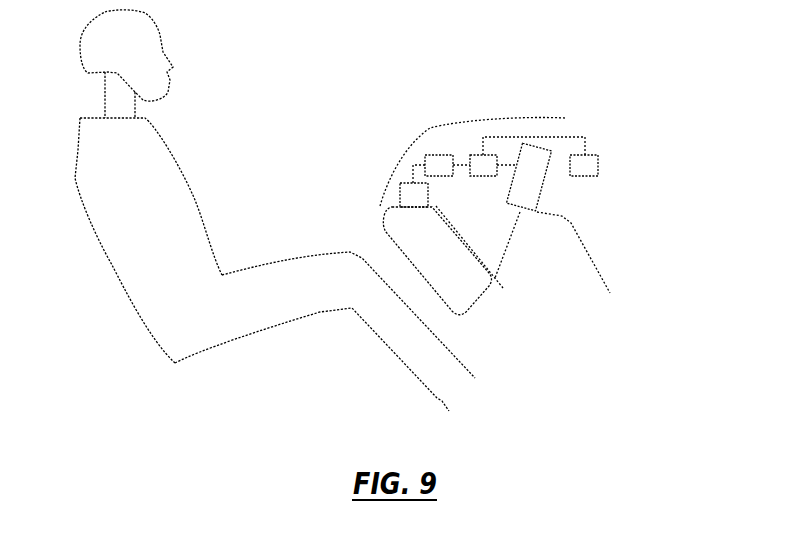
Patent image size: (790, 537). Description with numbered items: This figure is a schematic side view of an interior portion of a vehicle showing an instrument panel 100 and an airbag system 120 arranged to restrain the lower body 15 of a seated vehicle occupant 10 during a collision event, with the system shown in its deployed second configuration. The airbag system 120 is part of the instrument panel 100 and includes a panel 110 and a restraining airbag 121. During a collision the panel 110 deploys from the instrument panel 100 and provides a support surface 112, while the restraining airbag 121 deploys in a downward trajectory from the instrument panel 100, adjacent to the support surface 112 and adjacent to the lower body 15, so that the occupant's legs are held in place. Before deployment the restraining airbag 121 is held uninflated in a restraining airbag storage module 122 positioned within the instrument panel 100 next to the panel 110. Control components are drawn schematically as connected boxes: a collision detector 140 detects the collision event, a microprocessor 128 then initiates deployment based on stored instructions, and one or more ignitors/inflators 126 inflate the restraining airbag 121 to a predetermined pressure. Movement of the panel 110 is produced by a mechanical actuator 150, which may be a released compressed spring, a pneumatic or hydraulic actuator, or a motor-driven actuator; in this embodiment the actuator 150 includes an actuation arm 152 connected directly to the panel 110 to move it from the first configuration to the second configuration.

The vehicle occupant 10 is at (152, 158).
The lower body of the vehicle occupant 15 is at (363, 295).
The instrument panel 100 is at (461, 130).
The panel 110 is at (497, 282).
The support surface 112 is at (483, 278).
The airbag system 120 is at (386, 126).
The restraining airbag 121 is at (404, 232).
The restraining airbag storage module 122 is at (415, 189).
The ignitors/inflators 126 is at (438, 163).
The microprocessor 128 is at (491, 165).
The collision detector 140 is at (590, 168).
The mechanical actuator 150 is at (535, 199).
The actuation arm 152 is at (503, 258).